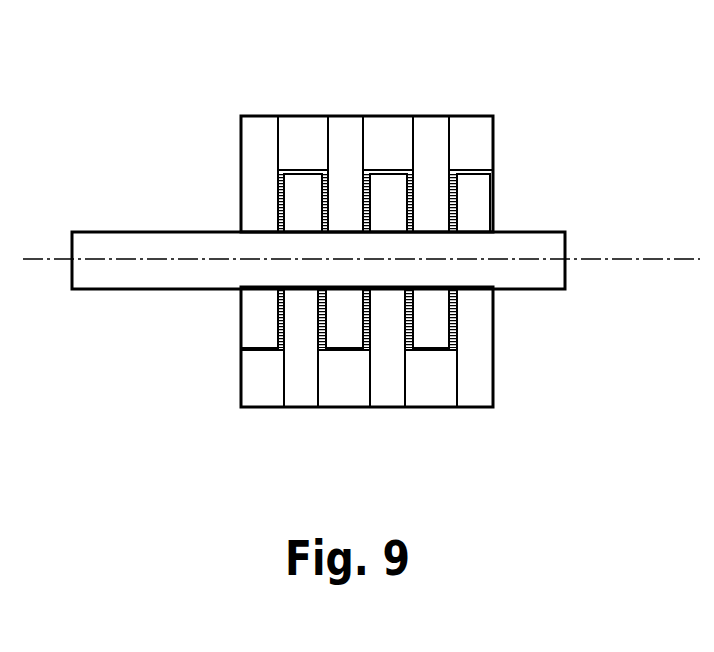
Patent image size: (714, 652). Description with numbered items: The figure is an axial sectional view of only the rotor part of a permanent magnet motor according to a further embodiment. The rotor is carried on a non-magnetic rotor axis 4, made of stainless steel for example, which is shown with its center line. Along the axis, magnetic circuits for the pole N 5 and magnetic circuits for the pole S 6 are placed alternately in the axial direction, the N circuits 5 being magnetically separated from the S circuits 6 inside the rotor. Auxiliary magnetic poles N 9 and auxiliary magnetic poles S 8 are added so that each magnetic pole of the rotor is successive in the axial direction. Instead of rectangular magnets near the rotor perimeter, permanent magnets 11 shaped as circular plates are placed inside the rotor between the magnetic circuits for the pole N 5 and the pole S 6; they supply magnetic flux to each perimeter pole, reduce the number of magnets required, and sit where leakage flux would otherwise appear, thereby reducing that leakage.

The non-magnetic rotor axis 4 is at (145, 242).
The magnetic circuit for the pole N 5 is at (433, 124).
The magnetic circuit for the pole S 6 is at (480, 400).
The auxiliary magnetic pole S 8 is at (432, 400).
The auxiliary magnetic pole N 9 is at (482, 124).
The permanent magnet shaped in a circular plate 11 is at (458, 210).